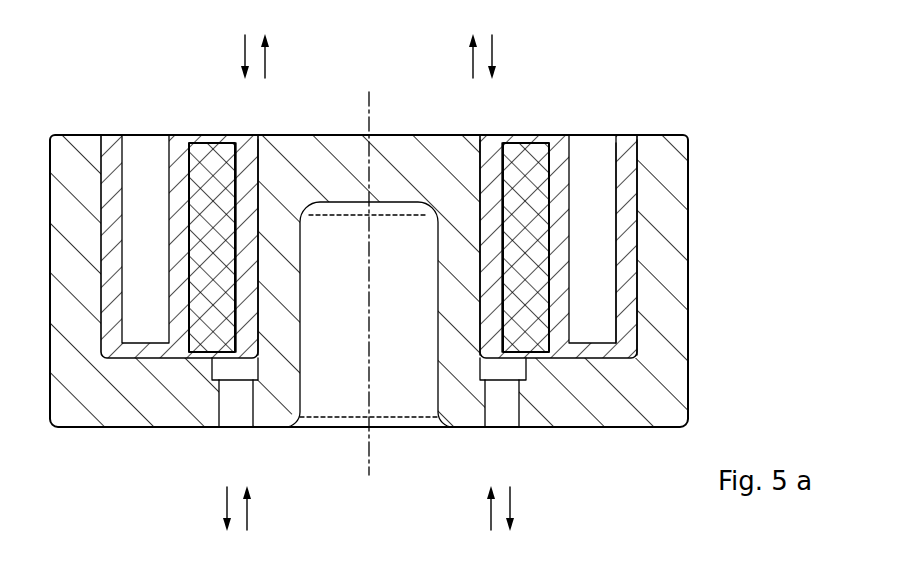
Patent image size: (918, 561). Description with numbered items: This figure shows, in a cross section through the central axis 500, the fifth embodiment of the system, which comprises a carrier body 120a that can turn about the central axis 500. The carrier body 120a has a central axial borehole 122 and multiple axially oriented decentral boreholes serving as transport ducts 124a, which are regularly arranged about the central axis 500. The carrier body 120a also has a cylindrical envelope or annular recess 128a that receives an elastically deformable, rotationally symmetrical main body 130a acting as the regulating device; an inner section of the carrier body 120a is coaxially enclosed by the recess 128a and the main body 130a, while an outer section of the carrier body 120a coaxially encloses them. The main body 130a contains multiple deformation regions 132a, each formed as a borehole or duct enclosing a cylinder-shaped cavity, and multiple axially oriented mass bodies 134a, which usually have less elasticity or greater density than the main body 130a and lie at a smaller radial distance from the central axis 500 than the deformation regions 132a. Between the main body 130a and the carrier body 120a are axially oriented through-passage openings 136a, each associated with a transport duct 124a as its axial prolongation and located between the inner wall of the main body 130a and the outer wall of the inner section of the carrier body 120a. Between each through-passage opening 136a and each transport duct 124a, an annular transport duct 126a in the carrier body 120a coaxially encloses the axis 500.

The carrier body 120a is at (690, 275).
The central axial borehole 122 is at (407, 392).
The transport duct 124a is at (236, 410).
The annular transport duct 126a is at (215, 372).
The annular recess 128a is at (628, 137).
The main body 130a is at (530, 135).
The deformation region 132a is at (142, 135).
The mass body 134a is at (214, 142).
The through-passage opening 136a is at (255, 135).
The central axis 500 is at (372, 95).